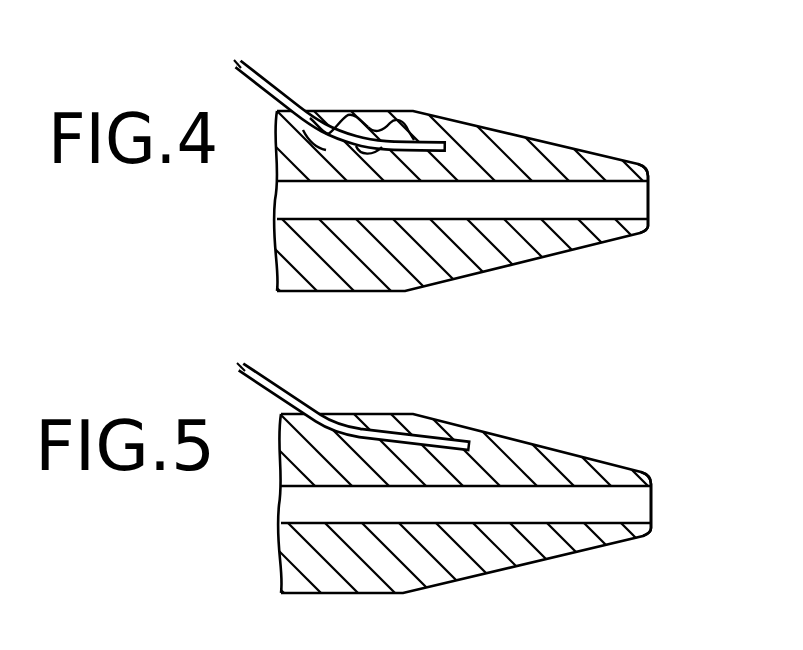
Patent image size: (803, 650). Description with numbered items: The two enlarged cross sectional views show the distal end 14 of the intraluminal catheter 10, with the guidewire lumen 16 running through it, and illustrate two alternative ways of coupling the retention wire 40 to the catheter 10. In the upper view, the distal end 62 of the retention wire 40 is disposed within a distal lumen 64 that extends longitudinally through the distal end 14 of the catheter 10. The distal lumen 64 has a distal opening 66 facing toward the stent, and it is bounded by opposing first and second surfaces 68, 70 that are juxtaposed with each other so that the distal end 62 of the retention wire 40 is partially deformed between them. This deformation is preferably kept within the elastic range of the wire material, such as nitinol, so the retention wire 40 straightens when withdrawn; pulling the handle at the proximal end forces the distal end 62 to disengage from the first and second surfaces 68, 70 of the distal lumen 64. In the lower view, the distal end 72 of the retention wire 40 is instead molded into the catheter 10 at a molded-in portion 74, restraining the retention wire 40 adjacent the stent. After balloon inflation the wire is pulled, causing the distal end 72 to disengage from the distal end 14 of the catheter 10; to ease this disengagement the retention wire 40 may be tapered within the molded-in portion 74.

In FIG. 4, the intraluminal catheter 10 is at (347, 325).
In FIG. 5, the intraluminal catheter 10 is at (372, 598).
In FIG. 4, the distal end of the catheter 14 is at (668, 170).
In FIG. 5, the distal end of the catheter 14 is at (672, 472).
In FIG. 4, the guidewire lumen 16 is at (623, 211).
In FIG. 5, the guidewire lumen 16 is at (619, 517).
In FIG. 4, the retention wire 40 is at (254, 63).
In FIG. 5, the retention wire 40 is at (262, 366).
In FIG. 4, the distal end of the retention wire 62 is at (394, 127).
In FIG. 4, the distal lumen 64 is at (368, 113).
In FIG. 4, the distal opening 66 is at (317, 107).
In FIG. 4, the first surface 68 is at (346, 108).
In FIG. 4, the second surface 70 is at (318, 150).
In FIG. 5, the distal end of the retention wire 72 is at (402, 430).
In FIG. 5, the molded-in portion 74 is at (370, 440).